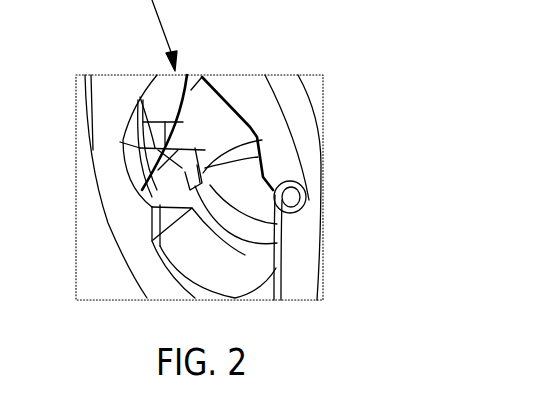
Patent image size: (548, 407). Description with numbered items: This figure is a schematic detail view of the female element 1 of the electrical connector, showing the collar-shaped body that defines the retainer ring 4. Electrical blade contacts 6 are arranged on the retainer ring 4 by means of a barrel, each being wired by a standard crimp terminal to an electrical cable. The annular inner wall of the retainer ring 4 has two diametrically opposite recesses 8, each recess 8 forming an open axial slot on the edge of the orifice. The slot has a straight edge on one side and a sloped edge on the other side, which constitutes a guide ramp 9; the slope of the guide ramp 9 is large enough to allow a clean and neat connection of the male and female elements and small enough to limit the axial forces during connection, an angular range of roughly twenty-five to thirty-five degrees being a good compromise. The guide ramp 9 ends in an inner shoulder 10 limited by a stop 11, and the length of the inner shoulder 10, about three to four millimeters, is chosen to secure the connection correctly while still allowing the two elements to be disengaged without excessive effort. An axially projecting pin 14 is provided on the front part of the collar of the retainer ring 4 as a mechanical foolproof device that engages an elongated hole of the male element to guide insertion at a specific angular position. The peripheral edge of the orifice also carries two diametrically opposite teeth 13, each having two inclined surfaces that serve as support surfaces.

The female element 1 is at (303, 304).
The retainer ring 4 is at (303, 270).
The electrical blade contact 6 is at (237, 189).
The recess 8 is at (120, 142).
The guide ramp 9 is at (140, 97).
The inner shoulder 10 is at (197, 165).
The stop 11 is at (200, 163).
The tooth 13 is at (187, 75).
The pin 14 is at (300, 199).